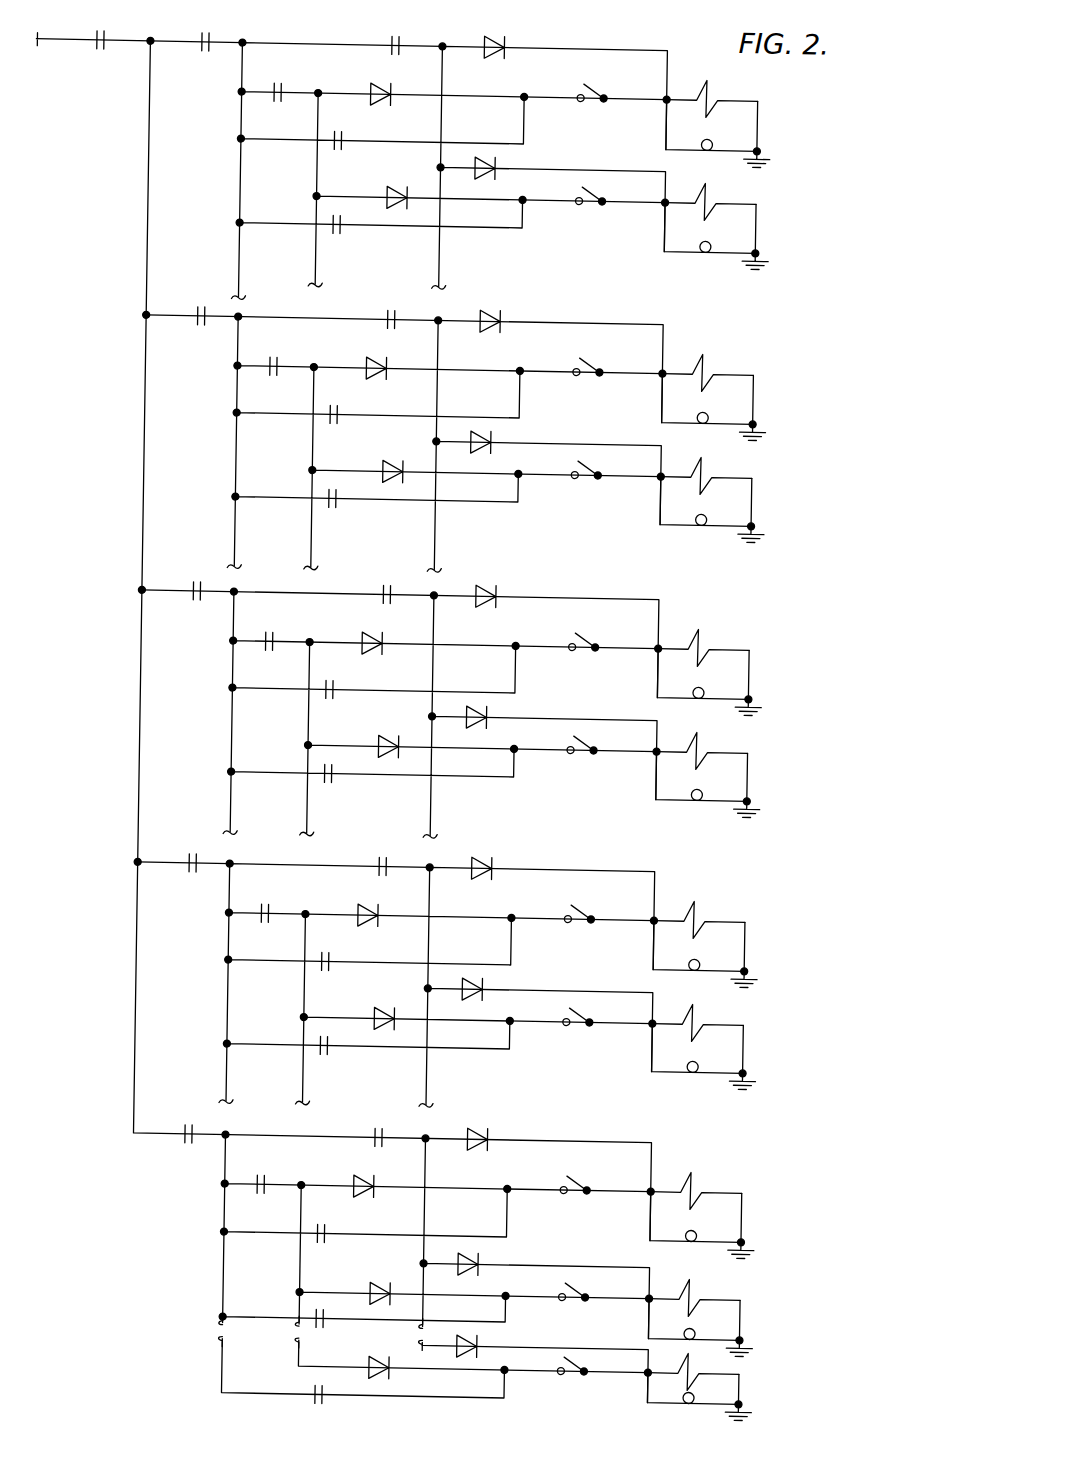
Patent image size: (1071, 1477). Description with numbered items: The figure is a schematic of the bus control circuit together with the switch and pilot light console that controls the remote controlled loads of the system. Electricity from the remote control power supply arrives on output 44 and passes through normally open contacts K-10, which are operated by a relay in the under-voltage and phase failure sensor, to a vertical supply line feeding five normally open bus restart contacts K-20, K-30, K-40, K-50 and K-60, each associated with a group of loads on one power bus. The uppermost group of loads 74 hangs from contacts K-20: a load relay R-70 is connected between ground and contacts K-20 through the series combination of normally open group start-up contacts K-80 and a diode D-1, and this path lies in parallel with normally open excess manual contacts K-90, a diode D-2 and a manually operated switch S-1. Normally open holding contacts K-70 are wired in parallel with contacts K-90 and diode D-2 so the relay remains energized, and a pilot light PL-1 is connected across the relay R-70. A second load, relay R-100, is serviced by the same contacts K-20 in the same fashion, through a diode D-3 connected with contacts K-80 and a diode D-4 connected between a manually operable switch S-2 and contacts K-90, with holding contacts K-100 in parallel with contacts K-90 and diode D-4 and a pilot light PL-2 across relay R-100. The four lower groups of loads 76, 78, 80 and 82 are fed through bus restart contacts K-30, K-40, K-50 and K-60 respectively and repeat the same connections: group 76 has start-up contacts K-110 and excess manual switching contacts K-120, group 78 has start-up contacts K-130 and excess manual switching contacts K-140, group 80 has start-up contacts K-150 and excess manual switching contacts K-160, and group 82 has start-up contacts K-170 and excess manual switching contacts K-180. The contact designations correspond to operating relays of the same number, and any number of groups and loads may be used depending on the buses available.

The output 44 is at (75, 36).
The normally open contacts K-10 is at (105, 48).
The bus restart contacts K-20 is at (211, 37).
The bus restart contacts K-30 is at (202, 301).
The bus restart contacts K-40 is at (202, 576).
The bus restart contacts K-50 is at (199, 844).
The bus restart contacts K-60 is at (192, 1122).
The holding contacts K-70 is at (346, 127).
The group start-up contacts K-80 is at (403, 30).
The excess manual contacts K-90 is at (285, 78).
The holding contacts K-100 is at (346, 229).
The start-up contacts K-110 is at (395, 299).
The excess manual switching contacts K-120 is at (281, 349).
The start-up contacts K-130 is at (389, 574).
The excess manual switching contacts K-140 is at (289, 625).
The start-up contacts K-150 is at (387, 843).
The excess manual switching contacts K-160 is at (281, 899).
The start-up contacts K-170 is at (389, 1119).
The excess manual switching contacts K-180 is at (284, 1184).
The diode D-1 is at (499, 28).
The diode D-2 is at (388, 75).
The diode D-3 is at (491, 146).
The diode D-4 is at (401, 178).
The manually operated switch S-1 is at (597, 75).
The manually operable switch S-2 is at (599, 180).
The load relay R-70 is at (709, 74).
The relay R-100 is at (711, 172).
The pilot light PL-1 is at (712, 128).
The pilot light PL-2 is at (713, 230).
The group of loads 74 is at (740, 168).
The group of loads 76 is at (777, 417).
The group of loads 78 is at (769, 665).
The group of loads 80 is at (773, 950).
The group of loads 82 is at (778, 1254).